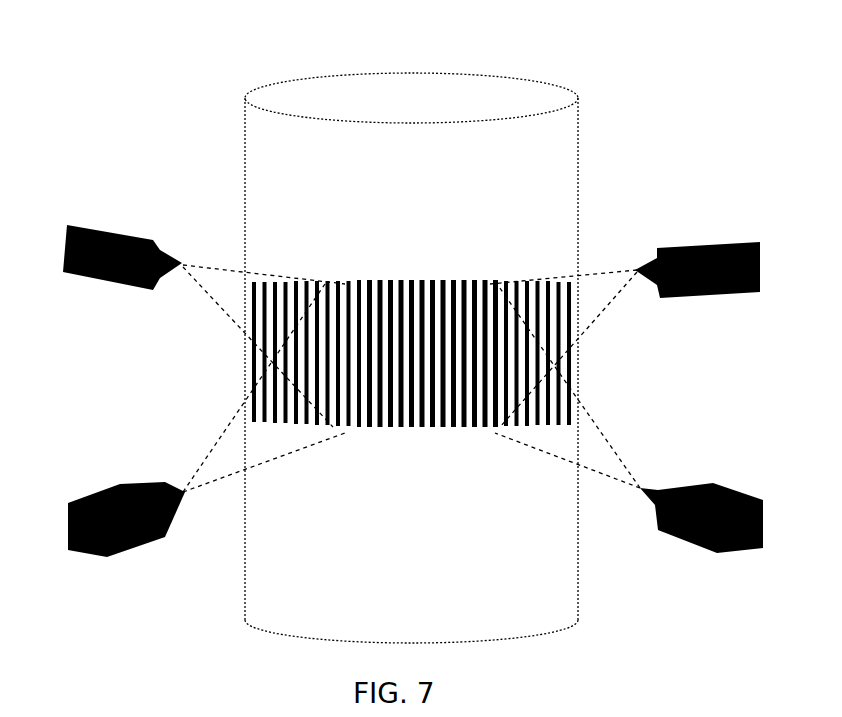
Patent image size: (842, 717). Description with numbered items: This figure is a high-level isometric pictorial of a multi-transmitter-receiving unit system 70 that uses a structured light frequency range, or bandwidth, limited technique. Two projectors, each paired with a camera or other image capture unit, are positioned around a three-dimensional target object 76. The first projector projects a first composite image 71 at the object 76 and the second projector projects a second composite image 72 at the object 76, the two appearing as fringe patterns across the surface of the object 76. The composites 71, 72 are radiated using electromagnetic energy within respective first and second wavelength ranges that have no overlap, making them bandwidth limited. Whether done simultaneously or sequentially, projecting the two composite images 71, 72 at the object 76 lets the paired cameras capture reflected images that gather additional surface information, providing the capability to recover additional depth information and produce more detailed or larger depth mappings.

The multi-transmitter-receiving unit system 70 is at (630, 44).
The composite image 71 is at (343, 283).
The composite image 72 is at (476, 281).
The object 76 is at (418, 186).